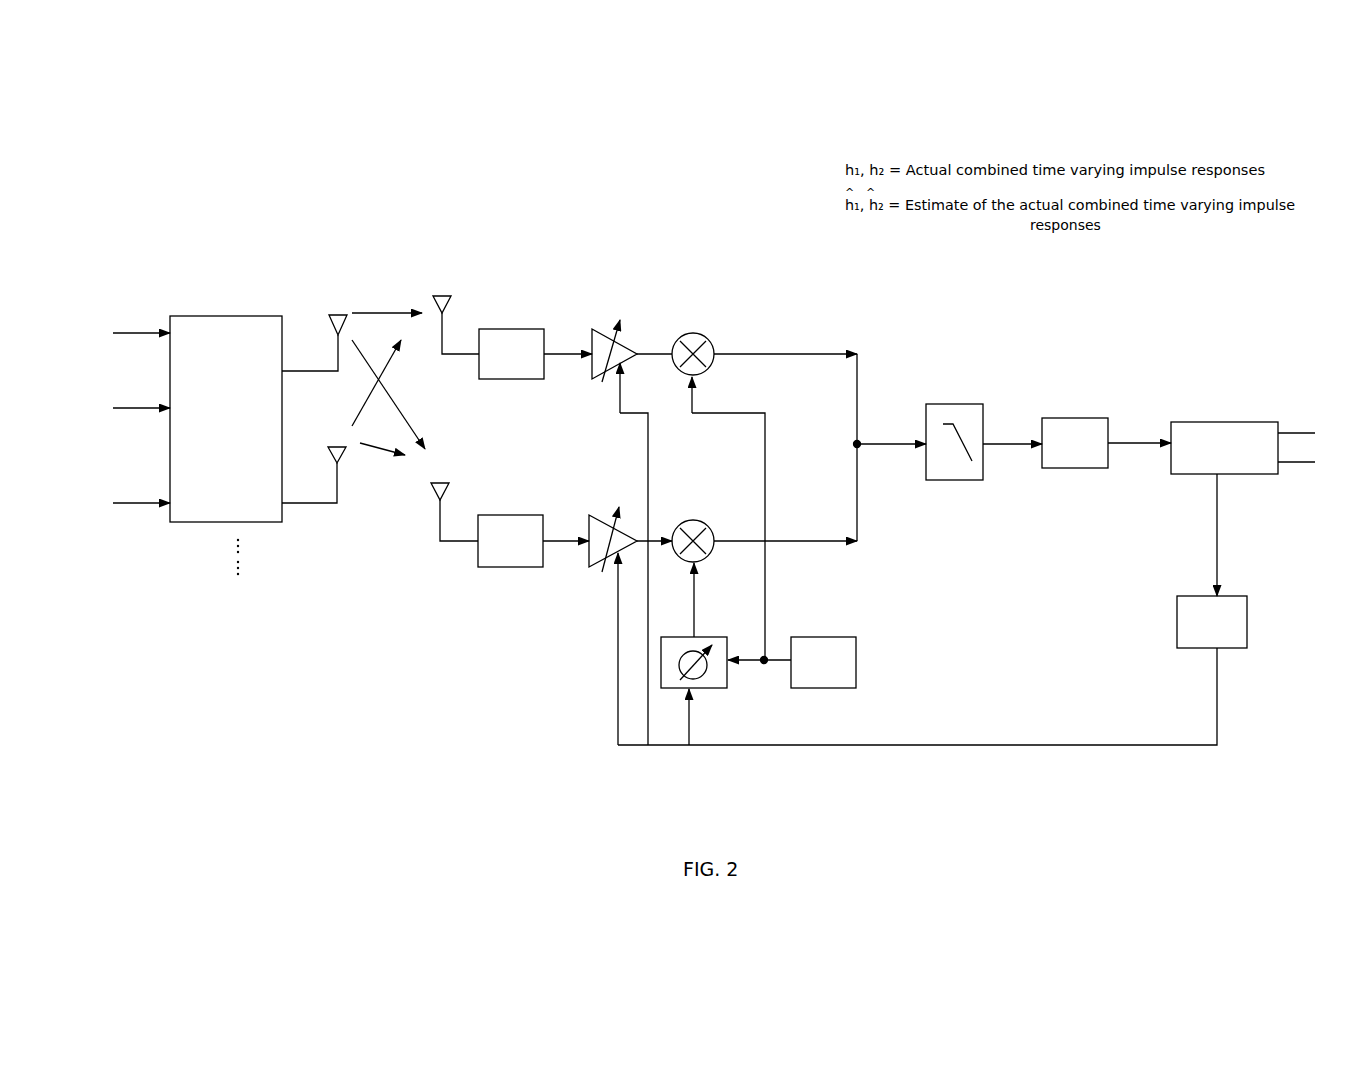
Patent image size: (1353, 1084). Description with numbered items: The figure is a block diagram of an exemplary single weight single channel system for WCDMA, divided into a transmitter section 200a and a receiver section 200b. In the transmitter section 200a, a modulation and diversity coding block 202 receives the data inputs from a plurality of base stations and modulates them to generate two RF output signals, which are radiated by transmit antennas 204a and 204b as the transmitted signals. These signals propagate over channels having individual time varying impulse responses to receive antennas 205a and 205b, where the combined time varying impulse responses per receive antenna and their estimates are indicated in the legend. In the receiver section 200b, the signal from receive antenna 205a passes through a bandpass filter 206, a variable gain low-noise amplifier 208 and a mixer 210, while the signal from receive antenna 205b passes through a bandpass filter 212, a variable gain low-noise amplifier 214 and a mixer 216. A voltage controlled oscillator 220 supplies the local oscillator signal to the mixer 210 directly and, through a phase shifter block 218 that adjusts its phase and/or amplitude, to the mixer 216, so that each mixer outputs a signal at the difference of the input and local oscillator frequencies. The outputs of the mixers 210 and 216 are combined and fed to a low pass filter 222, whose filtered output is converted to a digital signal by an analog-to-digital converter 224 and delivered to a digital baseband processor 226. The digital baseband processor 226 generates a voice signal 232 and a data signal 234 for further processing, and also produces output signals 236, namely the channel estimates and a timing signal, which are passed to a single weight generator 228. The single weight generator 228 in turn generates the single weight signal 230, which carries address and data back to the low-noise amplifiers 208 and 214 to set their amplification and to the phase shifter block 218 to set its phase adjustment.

The transmitter section 200a is at (260, 242).
The receiver section 200b is at (660, 240).
The modulation and diversity coding block 202 is at (214, 316).
The transmit antenna 204a is at (338, 315).
The transmit antenna 204b is at (332, 447).
The receive antenna 205a is at (442, 296).
The receive antenna 205b is at (440, 483).
The bandpass filter 206 is at (525, 329).
The variable gain low-noise amplifier 208 is at (606, 329).
The mixer 210 is at (705, 337).
The bandpass filter 212 is at (505, 515).
The variable gain low-noise amplifier 214 is at (605, 515).
The mixer 216 is at (700, 520).
The phase shifter block 218 is at (718, 637).
The voltage controlled oscillator 220 is at (845, 637).
The low pass filter 222 is at (953, 404).
The analog-to-digital converter 224 is at (1085, 418).
The digital baseband processor 226 is at (1209, 422).
The single weight generator 228 is at (1177, 620).
The single weight signal 230 is at (931, 745).
The voice signal 232 is at (1311, 433).
The data signal 234 is at (1313, 463).
The output signals 236 is at (1217, 518).